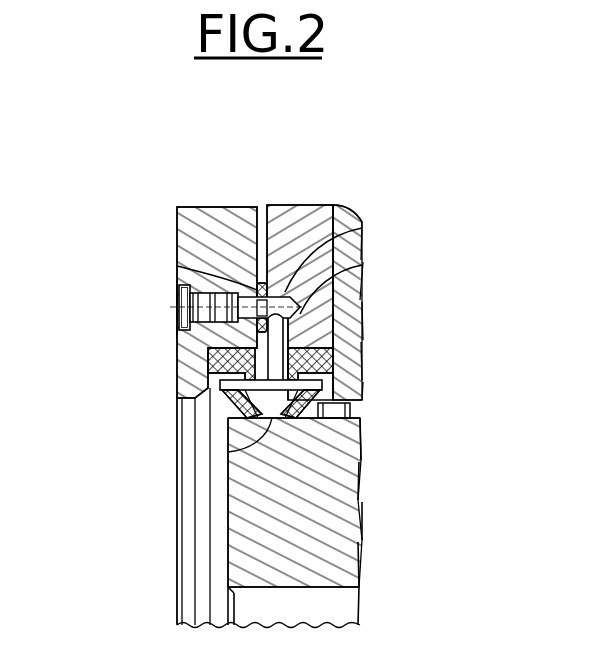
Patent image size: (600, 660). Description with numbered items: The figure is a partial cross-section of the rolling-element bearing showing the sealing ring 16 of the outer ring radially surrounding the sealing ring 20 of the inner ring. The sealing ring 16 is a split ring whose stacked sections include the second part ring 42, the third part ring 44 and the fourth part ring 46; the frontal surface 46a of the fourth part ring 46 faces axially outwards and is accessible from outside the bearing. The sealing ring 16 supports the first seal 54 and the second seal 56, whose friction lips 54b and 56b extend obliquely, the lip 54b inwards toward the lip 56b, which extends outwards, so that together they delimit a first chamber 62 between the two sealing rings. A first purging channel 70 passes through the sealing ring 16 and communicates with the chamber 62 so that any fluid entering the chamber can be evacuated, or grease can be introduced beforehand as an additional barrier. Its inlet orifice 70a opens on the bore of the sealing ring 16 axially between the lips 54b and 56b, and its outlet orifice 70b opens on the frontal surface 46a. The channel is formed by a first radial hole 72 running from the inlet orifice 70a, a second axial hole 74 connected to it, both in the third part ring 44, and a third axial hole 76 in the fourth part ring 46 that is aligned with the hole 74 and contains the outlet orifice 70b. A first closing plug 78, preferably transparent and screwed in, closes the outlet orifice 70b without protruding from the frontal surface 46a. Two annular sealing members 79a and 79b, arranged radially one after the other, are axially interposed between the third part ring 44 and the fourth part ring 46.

The sealing ring 16 is at (168, 211).
The sealing ring 20 is at (277, 527).
The second part ring 42 is at (350, 212).
The third part ring 44 is at (293, 210).
The fourth part ring 46 is at (213, 210).
The frontal surface 46a is at (209, 349).
The first seal 54 is at (221, 367).
The friction lip 54b is at (214, 412).
The second seal 56 is at (314, 358).
The friction lip 56b is at (351, 408).
The first chamber 62 is at (268, 414).
The first purging channel 70 is at (355, 291).
The inlet orifice 70a is at (334, 377).
The outlet orifice 70b is at (176, 286).
The first radial hole 72 is at (287, 330).
The second axial hole 74 is at (270, 290).
The third axial hole 76 is at (255, 280).
The first closing plug 78 is at (178, 315).
The first annular sealing member 79a is at (360, 224).
The second annular sealing member 79b is at (358, 263).